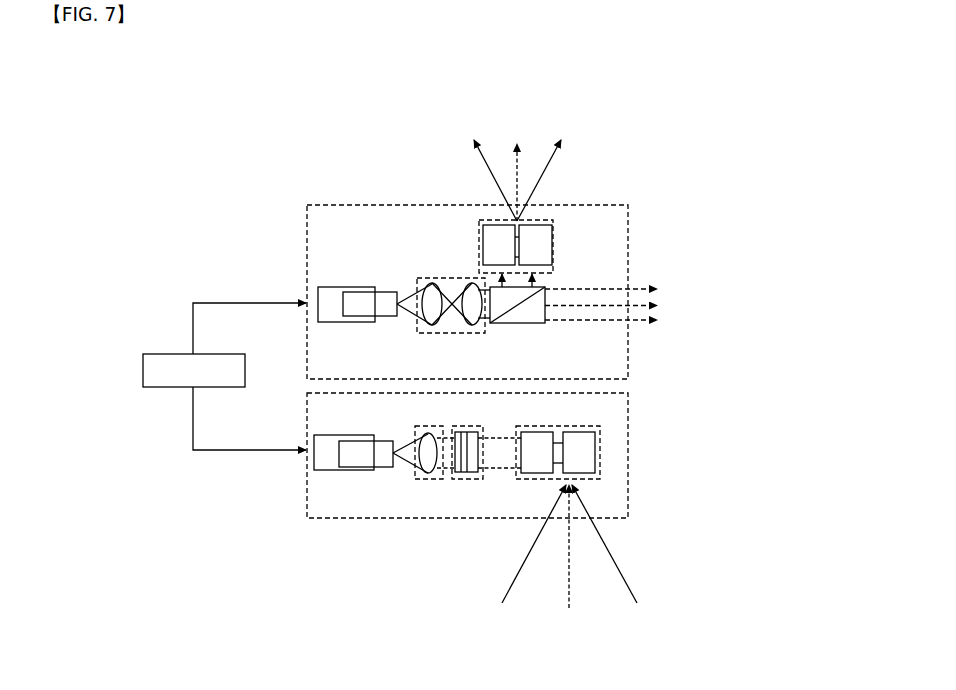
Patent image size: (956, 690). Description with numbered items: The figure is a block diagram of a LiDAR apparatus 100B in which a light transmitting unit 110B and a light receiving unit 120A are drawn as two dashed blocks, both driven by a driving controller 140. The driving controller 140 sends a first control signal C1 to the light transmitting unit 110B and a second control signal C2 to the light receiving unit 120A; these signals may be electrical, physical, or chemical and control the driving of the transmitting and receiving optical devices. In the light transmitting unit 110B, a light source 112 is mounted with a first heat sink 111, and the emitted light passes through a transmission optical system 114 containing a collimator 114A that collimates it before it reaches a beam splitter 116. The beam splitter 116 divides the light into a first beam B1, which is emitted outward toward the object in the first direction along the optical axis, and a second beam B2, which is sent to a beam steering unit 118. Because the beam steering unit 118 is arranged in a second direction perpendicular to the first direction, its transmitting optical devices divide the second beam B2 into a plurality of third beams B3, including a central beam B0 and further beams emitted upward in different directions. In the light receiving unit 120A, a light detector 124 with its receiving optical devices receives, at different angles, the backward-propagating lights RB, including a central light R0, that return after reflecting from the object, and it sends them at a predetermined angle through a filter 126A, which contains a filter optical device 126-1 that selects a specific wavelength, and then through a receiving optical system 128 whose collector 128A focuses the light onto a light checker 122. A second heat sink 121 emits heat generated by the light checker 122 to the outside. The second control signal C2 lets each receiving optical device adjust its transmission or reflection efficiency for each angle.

The LiDAR apparatus 100B is at (272, 160).
The light transmitting unit 110B is at (630, 249).
The light receiving unit 120A is at (630, 428).
The first heat sink 111 is at (332, 322).
The light source 112 is at (387, 292).
The transmission optical system 114 is at (451, 297).
The collimator 114A is at (472, 283).
The beam splitter 116 is at (513, 323).
The beam steering unit 118 is at (553, 233).
The second heat sink 121 is at (329, 470).
The light checker 122 is at (382, 441).
The light detector 124 is at (527, 479).
The filter 126A is at (477, 457).
The filter optical device 126-1 is at (472, 432).
The receiving optical system 128 is at (435, 457).
The collector 128A is at (430, 434).
The driving controller 140 is at (155, 388).
The first control signal C1 is at (249, 319).
The second control signal C2 is at (249, 432).
The first beam B1 is at (639, 302).
The second beam B2 is at (540, 280).
The third beams B3 is at (516, 147).
The third beam B0 is at (516, 169).
The backward-propagating lights RB is at (570, 580).
The backward-propagating light R0 is at (570, 558).